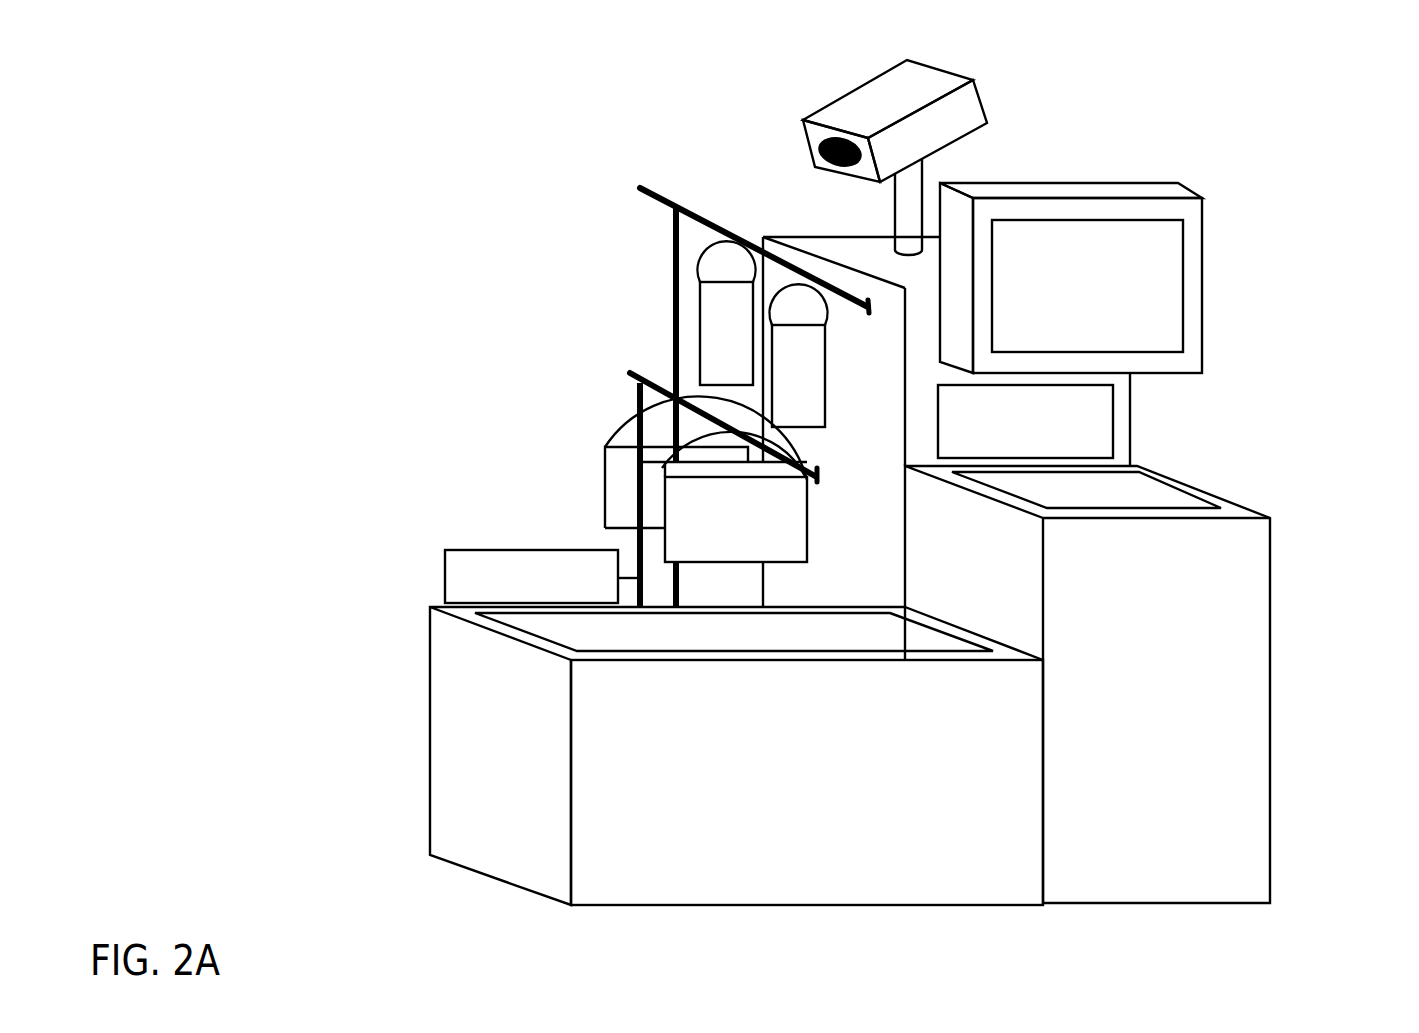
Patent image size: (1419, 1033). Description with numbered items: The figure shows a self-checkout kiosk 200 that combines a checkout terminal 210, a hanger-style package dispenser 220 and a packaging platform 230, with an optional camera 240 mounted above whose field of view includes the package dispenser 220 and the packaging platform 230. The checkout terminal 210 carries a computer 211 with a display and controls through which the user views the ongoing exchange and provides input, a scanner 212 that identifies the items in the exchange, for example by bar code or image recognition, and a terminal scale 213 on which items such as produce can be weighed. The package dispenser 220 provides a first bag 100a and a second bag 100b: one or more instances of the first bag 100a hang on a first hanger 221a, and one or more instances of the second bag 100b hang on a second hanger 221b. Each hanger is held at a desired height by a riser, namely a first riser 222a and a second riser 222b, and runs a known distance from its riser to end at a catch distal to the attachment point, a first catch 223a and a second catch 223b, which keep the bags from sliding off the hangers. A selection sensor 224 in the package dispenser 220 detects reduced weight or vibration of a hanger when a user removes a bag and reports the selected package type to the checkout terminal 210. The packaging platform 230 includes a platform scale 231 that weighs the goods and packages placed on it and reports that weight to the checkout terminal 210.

The self-checkout kiosk 200 is at (194, 128).
The checkout terminal 210 is at (1252, 814).
The computer 211 is at (1207, 283).
The scanner 212 is at (1095, 430).
The terminal scale 213 is at (1152, 484).
The package dispenser 220 is at (499, 251).
The first hanger 221a is at (633, 377).
The second hanger 221b is at (697, 210).
The first riser 222a is at (638, 395).
The second riser 222b is at (677, 285).
The first catch 223a is at (819, 480).
The second catch 223b is at (868, 310).
The selection sensor 224 is at (490, 548).
The packaging platform 230 is at (440, 748).
The platform scale 231 is at (613, 637).
The camera 240 is at (977, 100).
The first bag 100a is at (653, 525).
The second bag 100b is at (808, 380).